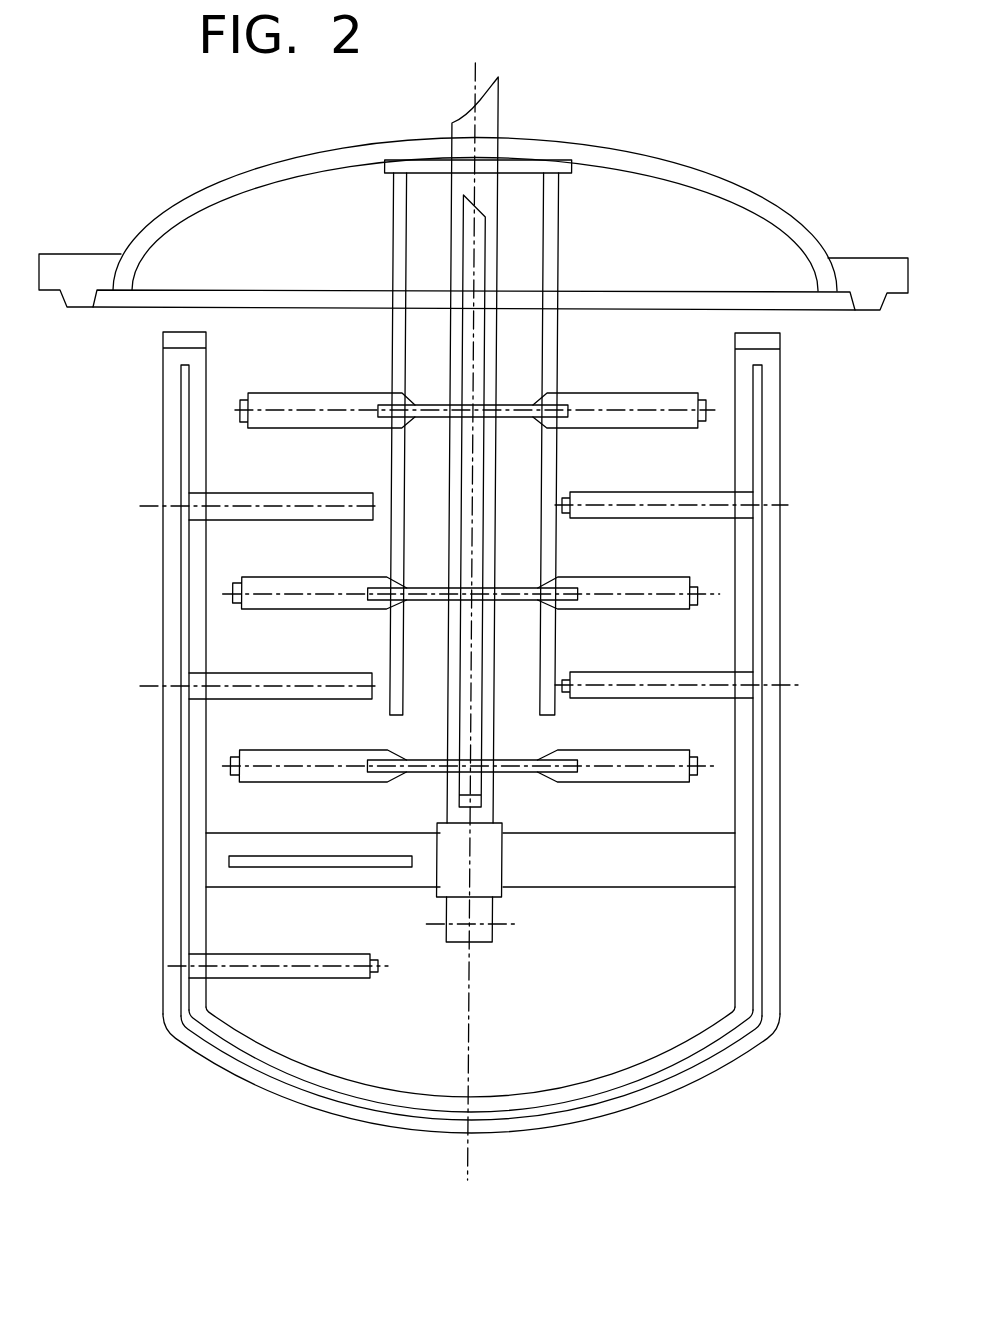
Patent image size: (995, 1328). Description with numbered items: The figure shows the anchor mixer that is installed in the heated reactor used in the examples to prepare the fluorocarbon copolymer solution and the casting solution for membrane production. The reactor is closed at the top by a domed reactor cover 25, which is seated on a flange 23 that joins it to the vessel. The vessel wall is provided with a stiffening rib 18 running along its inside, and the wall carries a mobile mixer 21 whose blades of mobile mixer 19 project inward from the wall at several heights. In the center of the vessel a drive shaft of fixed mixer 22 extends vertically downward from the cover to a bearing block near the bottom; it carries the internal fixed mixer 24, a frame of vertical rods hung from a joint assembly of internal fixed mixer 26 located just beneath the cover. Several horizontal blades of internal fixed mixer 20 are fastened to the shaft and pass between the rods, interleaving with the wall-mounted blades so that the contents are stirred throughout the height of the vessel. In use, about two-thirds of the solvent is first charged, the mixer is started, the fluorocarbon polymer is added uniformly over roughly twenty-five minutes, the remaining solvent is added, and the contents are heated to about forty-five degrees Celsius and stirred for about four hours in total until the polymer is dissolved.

The stiffening rib 18 is at (753, 852).
The blade of mobile mixer 19 is at (733, 687).
The blade of internal fixed mixer 20 is at (696, 585).
The mobile mixer 21 is at (765, 952).
The drive shaft of fixed mixer 22 is at (475, 495).
The flange 23 is at (868, 277).
The internal fixed mixer 24 is at (560, 242).
The reactor cover 25 is at (712, 172).
The joint assembly of internal fixed mixer 26 is at (548, 197).